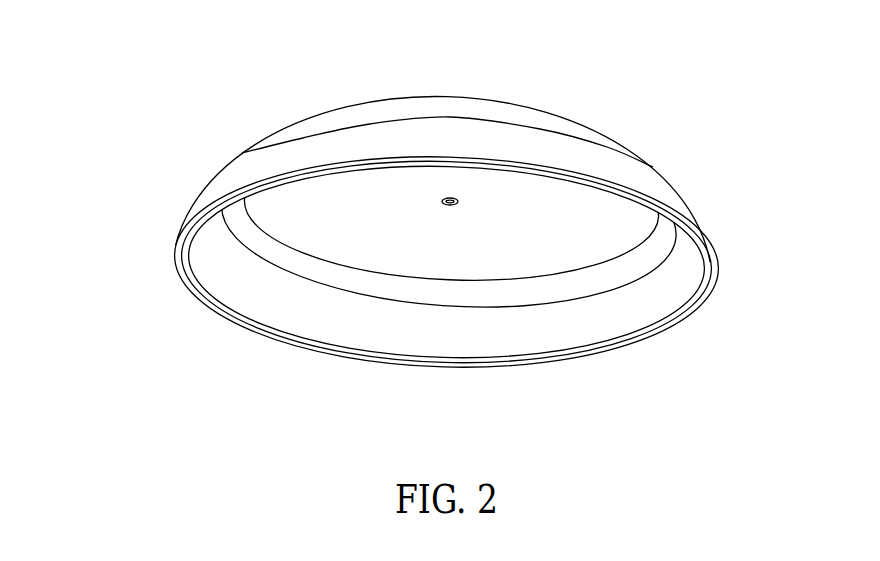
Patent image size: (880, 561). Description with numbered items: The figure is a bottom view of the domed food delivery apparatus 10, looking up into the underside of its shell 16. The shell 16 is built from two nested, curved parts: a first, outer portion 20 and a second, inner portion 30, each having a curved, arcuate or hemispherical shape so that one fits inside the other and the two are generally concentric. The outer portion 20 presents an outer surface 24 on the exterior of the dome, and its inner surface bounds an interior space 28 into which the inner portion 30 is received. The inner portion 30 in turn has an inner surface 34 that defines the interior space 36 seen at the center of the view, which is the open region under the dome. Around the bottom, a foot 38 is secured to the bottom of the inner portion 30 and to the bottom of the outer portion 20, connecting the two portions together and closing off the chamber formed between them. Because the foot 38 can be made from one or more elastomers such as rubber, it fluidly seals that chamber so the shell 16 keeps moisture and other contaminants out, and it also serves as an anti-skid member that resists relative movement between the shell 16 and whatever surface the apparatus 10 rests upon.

The food delivery apparatus 10 is at (160, 352).
The shell 16 is at (122, 70).
The outer portion 20 is at (680, 187).
The outer surface 24 is at (604, 162).
The interior space 28 is at (688, 230).
The inner portion 30 is at (578, 323).
The inner surface 34 is at (460, 242).
The interior space 36 is at (452, 306).
The foot 38 is at (676, 318).